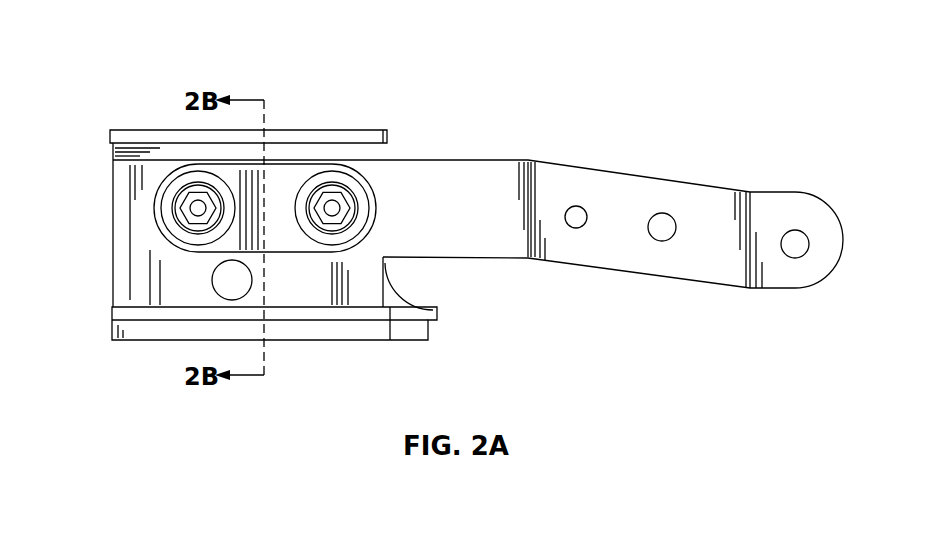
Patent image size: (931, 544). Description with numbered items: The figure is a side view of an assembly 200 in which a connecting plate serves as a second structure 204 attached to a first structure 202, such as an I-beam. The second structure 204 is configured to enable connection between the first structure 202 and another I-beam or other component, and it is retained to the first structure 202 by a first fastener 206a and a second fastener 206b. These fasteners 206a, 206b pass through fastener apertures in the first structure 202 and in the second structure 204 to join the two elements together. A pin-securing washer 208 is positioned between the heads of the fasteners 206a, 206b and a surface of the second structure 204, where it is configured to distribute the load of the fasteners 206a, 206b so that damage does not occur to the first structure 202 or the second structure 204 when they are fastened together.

The assembly 200 is at (692, 98).
The first structure 202 is at (318, 130).
The second structure 204 is at (688, 200).
The first fastener 206a is at (178, 203).
The second fastener 206b is at (345, 200).
The pin-securing washer 208 is at (205, 168).